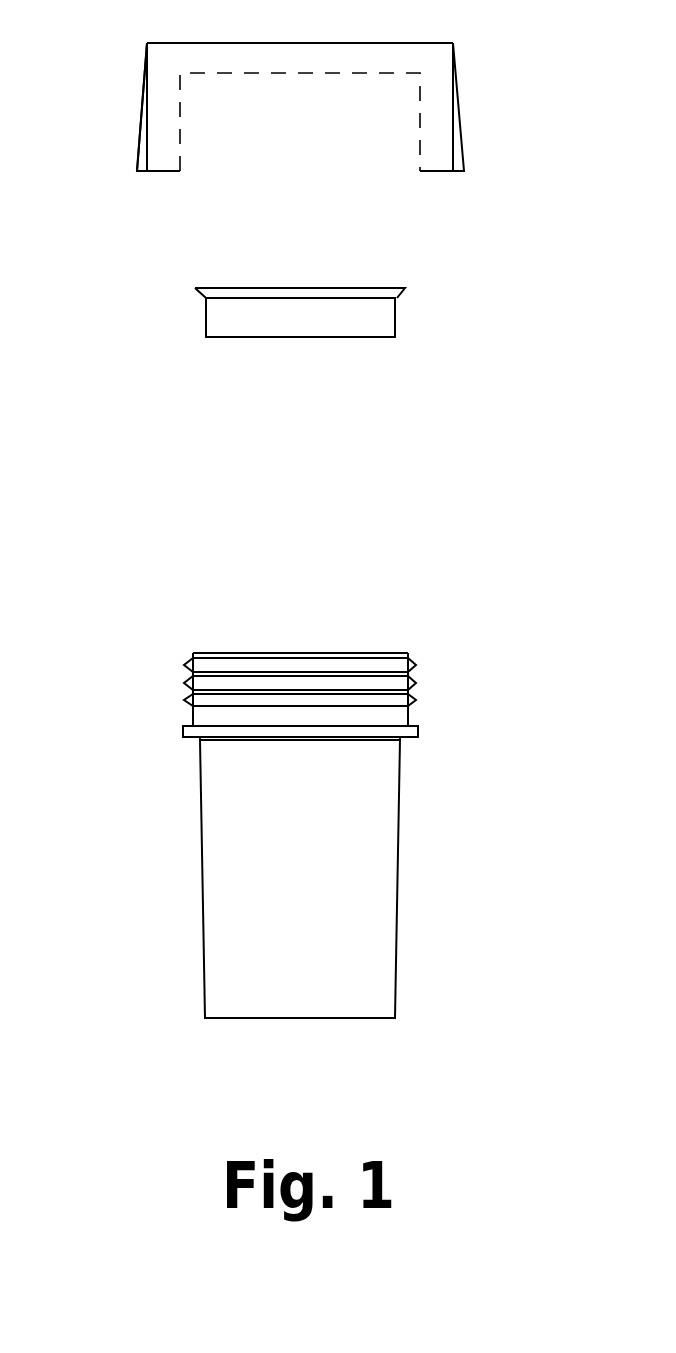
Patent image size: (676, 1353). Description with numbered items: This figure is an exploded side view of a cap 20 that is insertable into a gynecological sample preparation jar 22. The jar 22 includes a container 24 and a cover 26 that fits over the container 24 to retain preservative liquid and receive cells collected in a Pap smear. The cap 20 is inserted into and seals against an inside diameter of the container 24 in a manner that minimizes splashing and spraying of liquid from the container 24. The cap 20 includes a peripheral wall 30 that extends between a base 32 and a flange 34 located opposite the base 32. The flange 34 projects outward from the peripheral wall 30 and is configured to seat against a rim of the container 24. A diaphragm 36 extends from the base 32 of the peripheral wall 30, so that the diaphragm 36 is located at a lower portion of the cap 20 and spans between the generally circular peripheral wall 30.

The cap 20 is at (396, 318).
The gynecological sample preparation jar 22 is at (454, 73).
The container 24 is at (200, 845).
The cover 26 is at (140, 117).
The peripheral wall 30 is at (206, 313).
The base 32 is at (207, 338).
The flange 34 is at (203, 290).
The diaphragm 36 is at (305, 338).